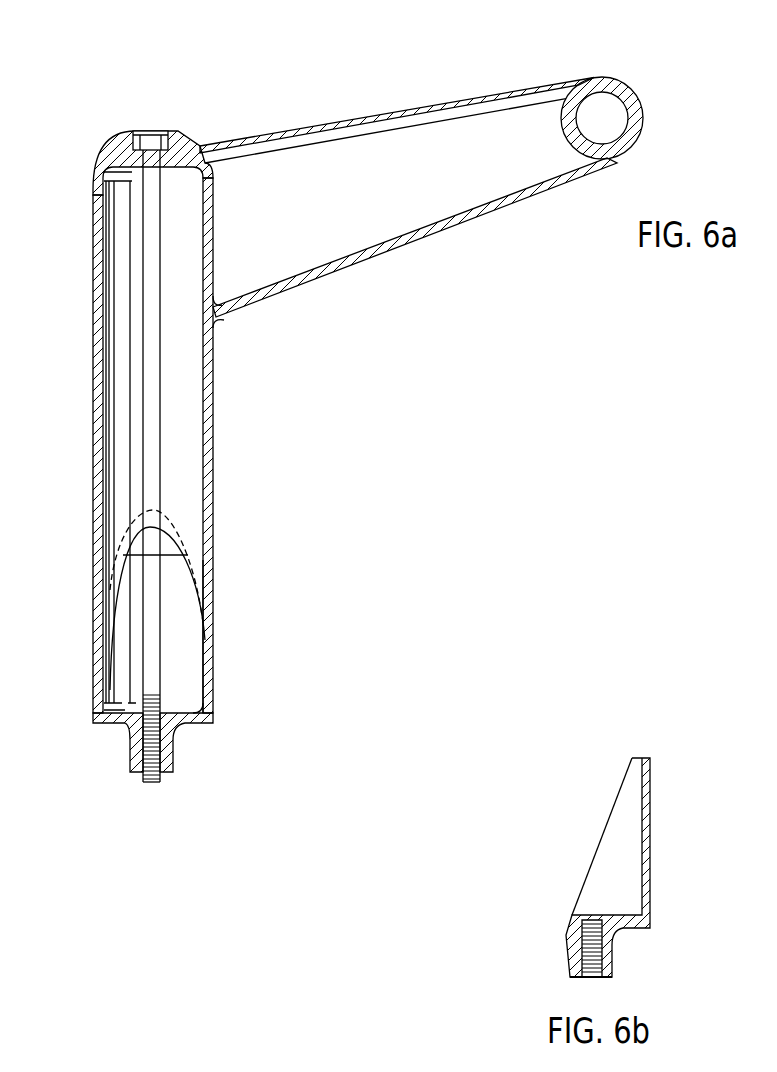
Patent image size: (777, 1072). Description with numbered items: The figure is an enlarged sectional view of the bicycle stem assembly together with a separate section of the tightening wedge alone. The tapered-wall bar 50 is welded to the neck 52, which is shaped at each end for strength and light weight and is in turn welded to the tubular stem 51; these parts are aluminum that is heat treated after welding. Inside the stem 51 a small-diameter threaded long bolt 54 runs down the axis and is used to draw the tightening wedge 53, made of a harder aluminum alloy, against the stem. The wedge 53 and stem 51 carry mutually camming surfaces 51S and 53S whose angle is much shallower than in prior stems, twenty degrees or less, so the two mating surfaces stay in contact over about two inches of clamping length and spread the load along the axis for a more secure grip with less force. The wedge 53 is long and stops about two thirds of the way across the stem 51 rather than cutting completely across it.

In FIG. 6A, the bar 50 is at (609, 78).
In FIG. 6A, the stem 51 is at (93, 360).
In FIG. 6A, the camming surface 51S is at (190, 527).
In FIG. 6A, the neck 52 is at (373, 115).
In FIG. 6A, the tightening wedge 53 is at (215, 711).
In FIG. 6B, the tightening wedge 53 is at (653, 903).
In FIG. 6A, the camming surface 53S is at (215, 652).
In FIG. 6B, the camming surface 53S is at (601, 837).
In FIG. 6A, the threaded long bolt 54 is at (154, 131).